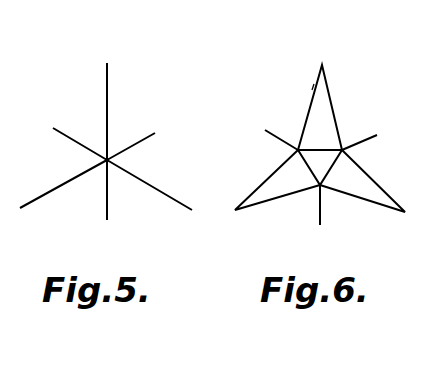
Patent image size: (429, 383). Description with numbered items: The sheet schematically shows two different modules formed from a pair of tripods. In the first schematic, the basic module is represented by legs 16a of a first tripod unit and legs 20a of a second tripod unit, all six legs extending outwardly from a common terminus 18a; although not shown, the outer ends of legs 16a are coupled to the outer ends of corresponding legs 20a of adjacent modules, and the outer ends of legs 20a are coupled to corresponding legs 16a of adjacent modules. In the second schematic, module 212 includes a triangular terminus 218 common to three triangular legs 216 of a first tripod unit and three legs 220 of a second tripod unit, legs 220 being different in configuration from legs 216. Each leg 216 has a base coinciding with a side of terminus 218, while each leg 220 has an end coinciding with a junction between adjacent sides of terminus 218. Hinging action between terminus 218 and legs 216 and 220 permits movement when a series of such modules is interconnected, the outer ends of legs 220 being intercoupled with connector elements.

In FIG. 5, the legs of the first tripod unit 16a is at (107, 84).
In FIG. 5, the common terminus 18a is at (112, 153).
In FIG. 5, the legs of the second tripod unit 20a is at (68, 137).
In FIG. 6, the module 212 is at (304, 85).
In FIG. 6, the triangular legs 216 is at (329, 82).
In FIG. 6, the triangular terminus 218 is at (340, 144).
In FIG. 6, the legs of the second tripod unit 220 is at (286, 121).